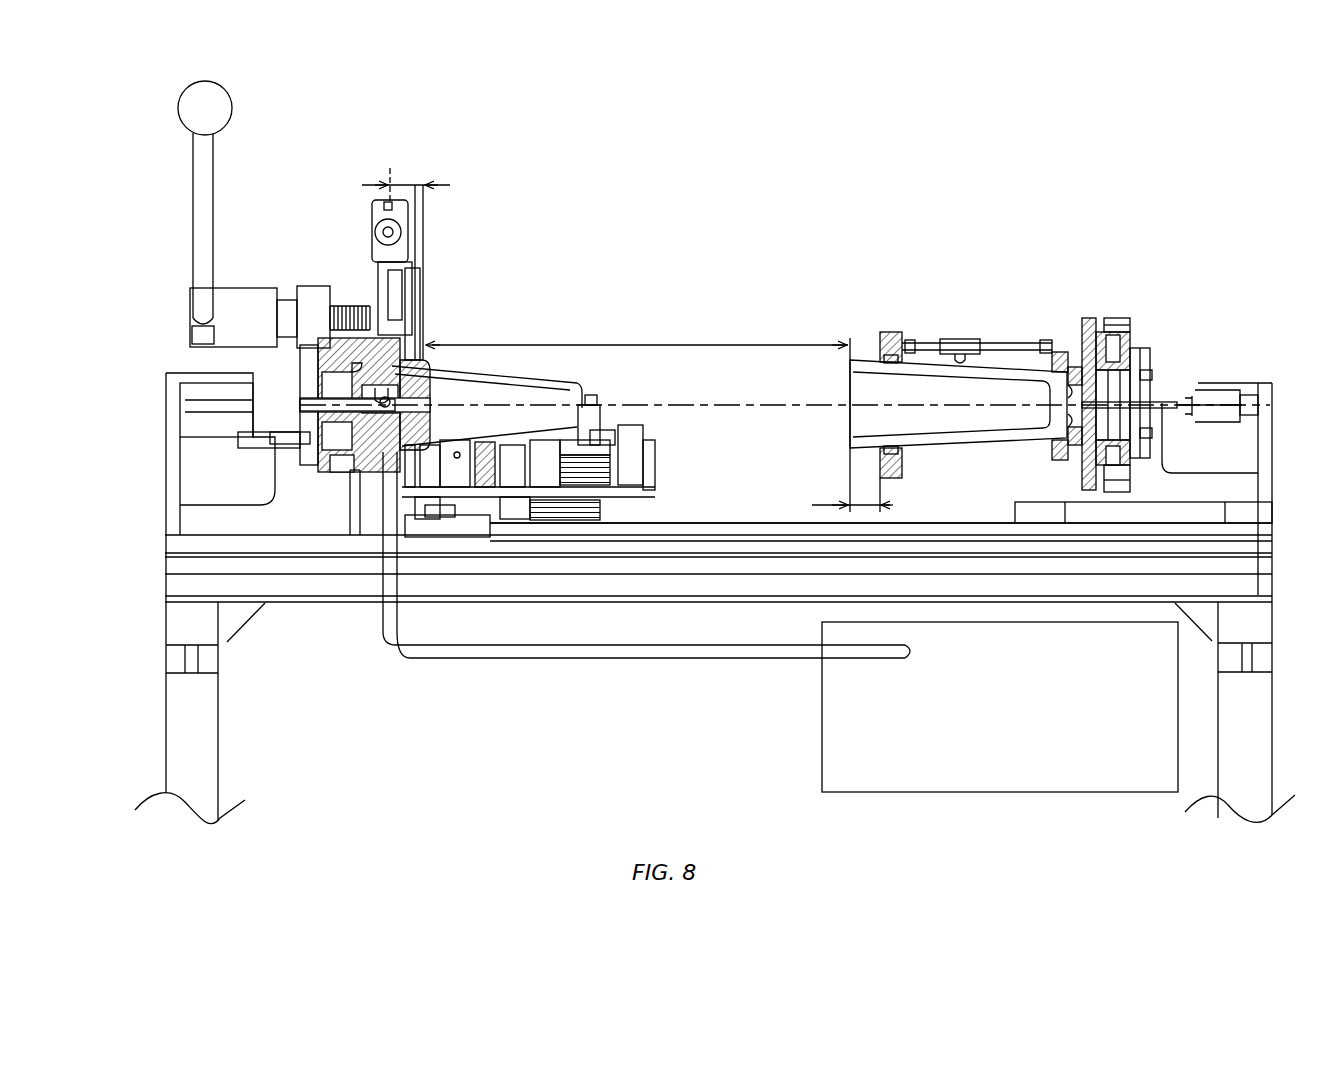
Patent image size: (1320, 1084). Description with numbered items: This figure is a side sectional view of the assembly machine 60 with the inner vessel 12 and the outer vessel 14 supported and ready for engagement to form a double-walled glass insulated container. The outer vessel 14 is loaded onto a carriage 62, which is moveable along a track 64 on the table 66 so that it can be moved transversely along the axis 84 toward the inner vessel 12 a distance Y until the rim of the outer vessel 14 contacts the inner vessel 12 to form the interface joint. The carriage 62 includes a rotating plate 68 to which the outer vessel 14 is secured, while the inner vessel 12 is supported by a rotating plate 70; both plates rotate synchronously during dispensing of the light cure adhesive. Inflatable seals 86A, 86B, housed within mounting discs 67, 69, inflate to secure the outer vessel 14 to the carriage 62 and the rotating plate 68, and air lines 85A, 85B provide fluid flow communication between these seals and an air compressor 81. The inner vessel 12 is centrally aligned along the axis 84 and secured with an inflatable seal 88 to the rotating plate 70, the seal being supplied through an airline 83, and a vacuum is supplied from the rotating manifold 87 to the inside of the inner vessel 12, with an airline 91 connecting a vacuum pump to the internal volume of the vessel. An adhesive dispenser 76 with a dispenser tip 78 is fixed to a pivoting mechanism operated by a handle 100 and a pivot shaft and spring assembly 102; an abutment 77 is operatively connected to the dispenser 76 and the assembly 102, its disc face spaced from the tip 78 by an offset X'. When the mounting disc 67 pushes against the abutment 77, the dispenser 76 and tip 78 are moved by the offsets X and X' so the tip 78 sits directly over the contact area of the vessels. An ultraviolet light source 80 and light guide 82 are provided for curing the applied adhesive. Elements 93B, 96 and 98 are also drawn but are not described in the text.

The assembly machine 60 is at (975, 188).
The carriage 62 is at (1222, 372).
The track 64 is at (730, 522).
The table 66 is at (160, 578).
The mounting disc 67 is at (1058, 458).
The rotating plate 68 is at (1092, 320).
The mounting disc 69 is at (892, 480).
The rotating plate 70 is at (352, 482).
The adhesive dispenser 76 is at (465, 226).
The abutment 77 is at (420, 284).
The dispenser tip 78 is at (382, 230).
The ultraviolet light source 80 is at (990, 794).
The air compressor 81 is at (392, 408).
The light guide 82 is at (402, 662).
The airline 83 is at (320, 405).
The axis 84 is at (688, 402).
The air line 85A is at (1170, 400).
The air line 85B is at (1010, 340).
The inflatable seal 86A is at (1060, 355).
The inflatable seal 86B is at (890, 334).
The rotating manifold 87 is at (208, 386).
The inflatable seal 88 is at (392, 366).
The airline 91 is at (305, 425).
The fixture 93B is at (592, 440).
The clamp 96 is at (635, 460).
The sensor 98 is at (458, 462).
The handle 100 is at (218, 186).
The pivot shaft and spring assembly 102 is at (350, 312).
The inner vessel 12 is at (525, 380).
The outer vessel 14 is at (866, 356).